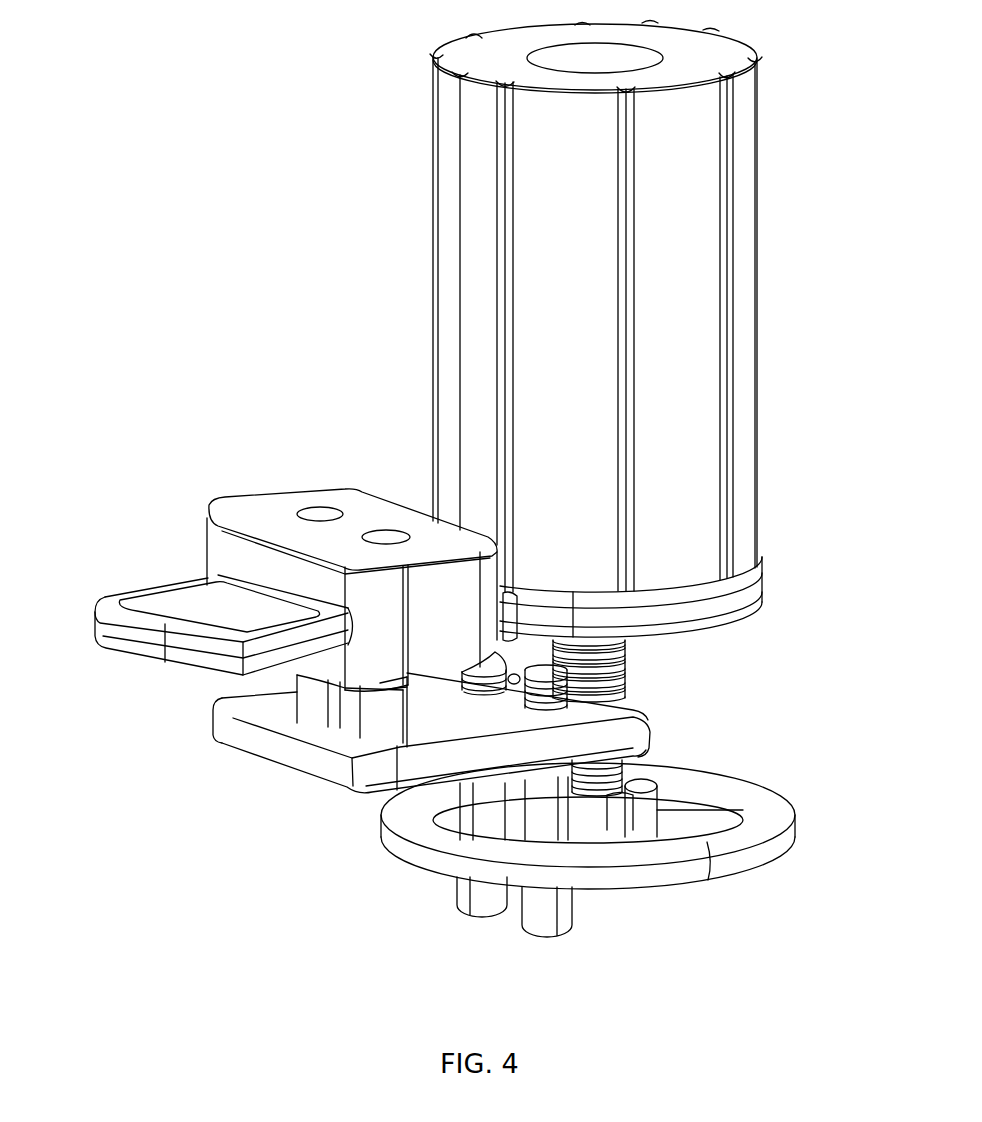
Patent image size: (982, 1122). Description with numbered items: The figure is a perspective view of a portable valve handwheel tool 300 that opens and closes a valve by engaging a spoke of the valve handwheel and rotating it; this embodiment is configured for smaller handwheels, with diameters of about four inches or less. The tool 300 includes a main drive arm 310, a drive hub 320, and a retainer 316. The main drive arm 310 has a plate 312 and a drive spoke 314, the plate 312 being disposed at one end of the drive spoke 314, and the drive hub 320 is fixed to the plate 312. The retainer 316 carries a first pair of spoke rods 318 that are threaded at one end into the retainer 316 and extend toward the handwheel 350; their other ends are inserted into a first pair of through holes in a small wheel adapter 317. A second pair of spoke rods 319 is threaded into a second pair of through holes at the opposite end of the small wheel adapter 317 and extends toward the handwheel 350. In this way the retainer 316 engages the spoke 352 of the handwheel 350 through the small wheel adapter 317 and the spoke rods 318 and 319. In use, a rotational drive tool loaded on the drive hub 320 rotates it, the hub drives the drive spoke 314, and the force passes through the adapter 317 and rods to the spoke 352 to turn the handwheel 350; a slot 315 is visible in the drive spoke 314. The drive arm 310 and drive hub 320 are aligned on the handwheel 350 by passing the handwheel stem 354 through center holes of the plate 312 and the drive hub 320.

The portable valve handwheel tool 300 is at (134, 39).
The main drive arm 310 is at (118, 313).
The plate 312 is at (568, 608).
The drive spoke 314 is at (132, 606).
The slot 315 is at (228, 620).
The retainer 316 is at (290, 509).
The small wheel adapter 317 is at (330, 768).
The first pair of spoke rods 318 is at (312, 703).
The second pair of spoke rods 319 is at (452, 885).
The drive hub 320 is at (431, 238).
The handwheel 350 is at (745, 865).
The spoke 352 is at (513, 828).
The handwheel stem 354 is at (618, 665).